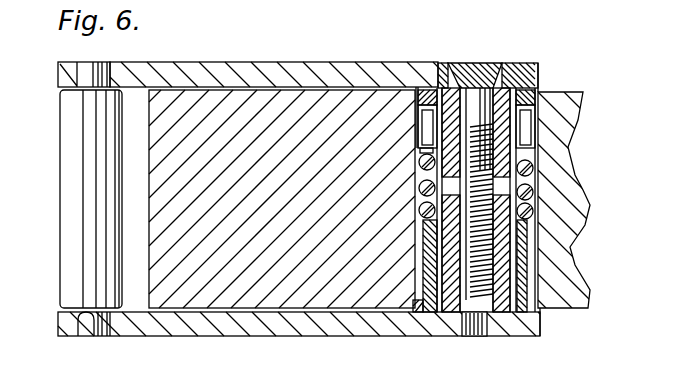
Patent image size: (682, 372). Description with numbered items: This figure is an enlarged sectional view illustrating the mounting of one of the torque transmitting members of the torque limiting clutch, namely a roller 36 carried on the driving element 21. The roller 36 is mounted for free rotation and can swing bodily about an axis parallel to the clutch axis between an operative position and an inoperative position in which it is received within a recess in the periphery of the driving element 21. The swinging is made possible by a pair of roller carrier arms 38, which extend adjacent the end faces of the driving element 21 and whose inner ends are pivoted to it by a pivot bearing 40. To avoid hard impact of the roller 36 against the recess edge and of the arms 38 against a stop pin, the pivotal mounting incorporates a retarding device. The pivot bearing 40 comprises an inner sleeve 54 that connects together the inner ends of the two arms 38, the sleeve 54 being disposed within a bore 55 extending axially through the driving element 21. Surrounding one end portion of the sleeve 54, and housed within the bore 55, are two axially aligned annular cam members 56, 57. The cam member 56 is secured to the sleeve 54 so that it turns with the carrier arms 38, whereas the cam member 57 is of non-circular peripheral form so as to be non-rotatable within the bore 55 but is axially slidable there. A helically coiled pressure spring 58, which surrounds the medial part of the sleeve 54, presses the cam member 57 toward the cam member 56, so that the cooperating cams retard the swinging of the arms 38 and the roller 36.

The driving element 21 is at (323, 103).
The torque transmitting member 36 is at (75, 174).
The arm 38 is at (252, 73).
The pivot pin 40 is at (474, 88).
The inner sleeve 54 is at (432, 90).
The bore 55 is at (427, 270).
The cam member 56 is at (537, 90).
The cam member 57 is at (527, 122).
The pressure spring 58 is at (570, 147).